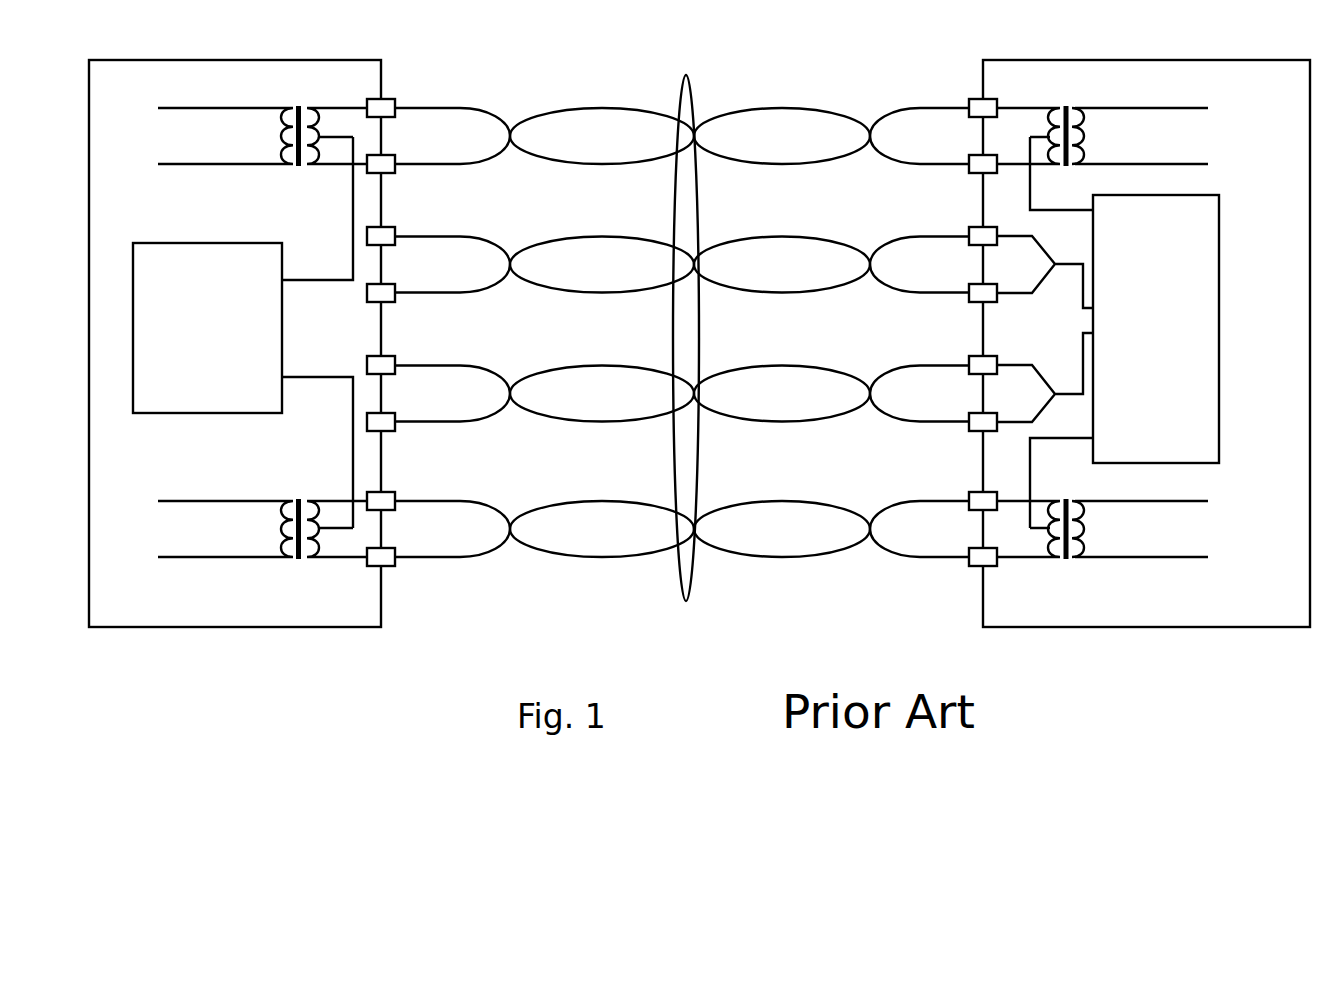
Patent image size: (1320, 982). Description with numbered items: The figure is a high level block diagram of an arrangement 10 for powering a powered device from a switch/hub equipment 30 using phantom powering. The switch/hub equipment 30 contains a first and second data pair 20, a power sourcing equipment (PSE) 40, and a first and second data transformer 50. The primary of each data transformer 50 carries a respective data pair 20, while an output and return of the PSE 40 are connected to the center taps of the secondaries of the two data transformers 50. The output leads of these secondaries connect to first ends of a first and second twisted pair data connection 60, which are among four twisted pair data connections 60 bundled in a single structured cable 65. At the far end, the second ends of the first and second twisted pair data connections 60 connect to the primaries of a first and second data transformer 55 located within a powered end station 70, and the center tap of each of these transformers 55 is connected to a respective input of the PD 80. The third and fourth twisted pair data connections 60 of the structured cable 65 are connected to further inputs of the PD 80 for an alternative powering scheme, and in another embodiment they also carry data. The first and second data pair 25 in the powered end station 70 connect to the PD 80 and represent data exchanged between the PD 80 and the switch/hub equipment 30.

The arrangement 10 is at (729, 59).
The data pair 20 is at (235, 166).
The data pair 25 is at (1146, 110).
The switch/hub equipment 30 is at (235, 628).
The power sourcing equipment (PSE) 40 is at (207, 414).
The data transformer 50 is at (300, 167).
The data transformer 55 is at (1068, 110).
The twisted pair data connection 60 is at (598, 166).
The structured cable 65 is at (688, 600).
The powered end station 70 is at (1152, 628).
The PD 80 is at (1220, 222).